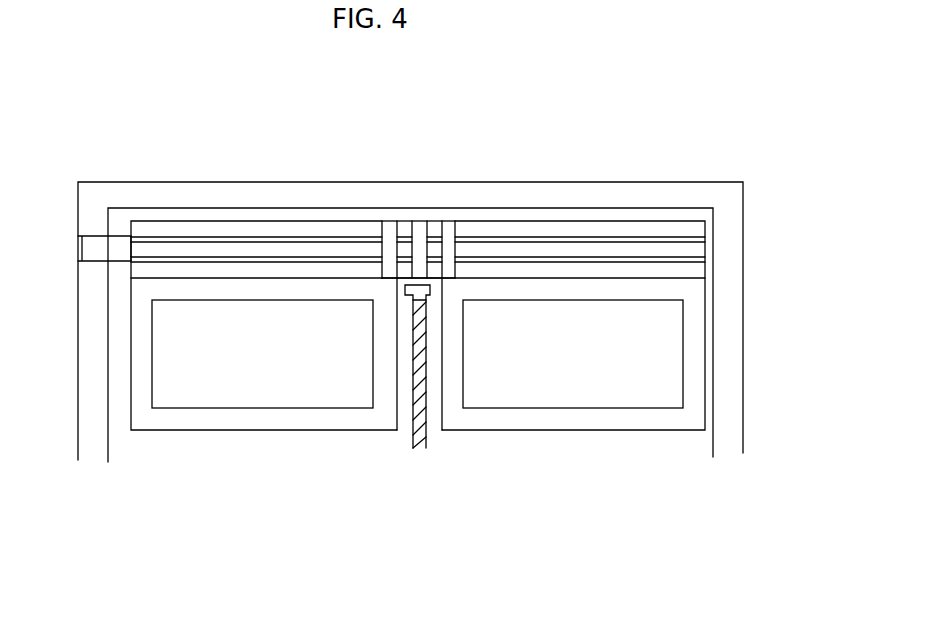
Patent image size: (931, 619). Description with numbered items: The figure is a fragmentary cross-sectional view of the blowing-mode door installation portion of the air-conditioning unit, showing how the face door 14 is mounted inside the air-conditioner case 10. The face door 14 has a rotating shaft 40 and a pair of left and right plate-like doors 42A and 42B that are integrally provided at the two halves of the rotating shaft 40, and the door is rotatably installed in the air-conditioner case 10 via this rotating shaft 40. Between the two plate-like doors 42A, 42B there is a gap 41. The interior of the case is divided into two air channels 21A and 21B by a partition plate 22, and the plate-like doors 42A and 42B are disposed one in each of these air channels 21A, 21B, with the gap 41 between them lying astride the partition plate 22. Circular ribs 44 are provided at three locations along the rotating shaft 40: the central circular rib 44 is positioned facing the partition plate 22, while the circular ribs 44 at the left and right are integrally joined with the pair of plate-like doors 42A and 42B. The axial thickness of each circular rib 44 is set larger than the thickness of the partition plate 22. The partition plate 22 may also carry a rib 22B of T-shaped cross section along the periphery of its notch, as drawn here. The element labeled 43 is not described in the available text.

The air-conditioner case 10 is at (375, 193).
The face door 14 is at (323, 460).
The air channel 21A is at (233, 447).
The air channel 21B is at (602, 443).
The partition plate 22 is at (410, 433).
The rib 22B is at (427, 293).
The rotating shaft 40 is at (270, 238).
The gap 41 is at (430, 417).
The plate-like door 42A is at (173, 390).
The plate-like door 42B is at (673, 355).
The lower rail 43 is at (582, 243).
The circular rib 44 is at (418, 227).